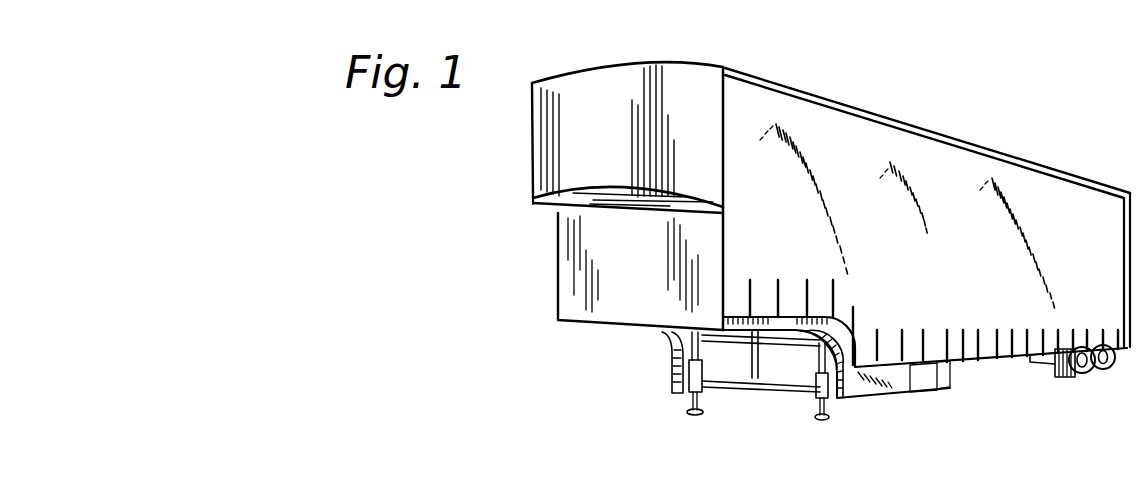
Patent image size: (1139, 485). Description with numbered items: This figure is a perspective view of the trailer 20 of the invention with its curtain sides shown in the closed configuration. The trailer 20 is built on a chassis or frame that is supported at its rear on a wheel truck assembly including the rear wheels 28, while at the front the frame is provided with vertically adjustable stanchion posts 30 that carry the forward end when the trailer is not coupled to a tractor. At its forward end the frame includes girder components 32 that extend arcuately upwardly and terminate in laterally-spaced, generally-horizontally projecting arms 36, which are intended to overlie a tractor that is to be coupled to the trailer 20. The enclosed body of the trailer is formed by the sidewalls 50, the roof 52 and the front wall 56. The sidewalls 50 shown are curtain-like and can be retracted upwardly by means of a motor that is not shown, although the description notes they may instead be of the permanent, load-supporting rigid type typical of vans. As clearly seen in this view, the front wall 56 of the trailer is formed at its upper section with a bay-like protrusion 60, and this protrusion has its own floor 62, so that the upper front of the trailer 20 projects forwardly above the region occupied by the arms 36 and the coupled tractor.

The trailer 20 is at (1080, 163).
The rear wheels 28 is at (1068, 378).
The stanchion posts 30 is at (818, 401).
The girder components 32 is at (830, 331).
The arms 36 is at (737, 327).
The sidewalls 50 is at (972, 197).
The roof 52 is at (945, 84).
The front wall 56 is at (578, 287).
The bay-like protrusion 60 is at (557, 126).
The floor 62 is at (542, 205).